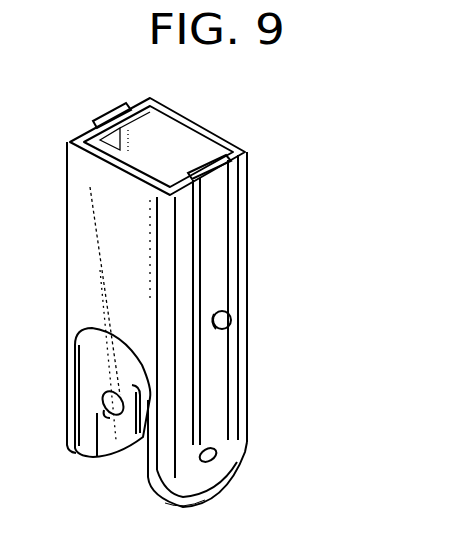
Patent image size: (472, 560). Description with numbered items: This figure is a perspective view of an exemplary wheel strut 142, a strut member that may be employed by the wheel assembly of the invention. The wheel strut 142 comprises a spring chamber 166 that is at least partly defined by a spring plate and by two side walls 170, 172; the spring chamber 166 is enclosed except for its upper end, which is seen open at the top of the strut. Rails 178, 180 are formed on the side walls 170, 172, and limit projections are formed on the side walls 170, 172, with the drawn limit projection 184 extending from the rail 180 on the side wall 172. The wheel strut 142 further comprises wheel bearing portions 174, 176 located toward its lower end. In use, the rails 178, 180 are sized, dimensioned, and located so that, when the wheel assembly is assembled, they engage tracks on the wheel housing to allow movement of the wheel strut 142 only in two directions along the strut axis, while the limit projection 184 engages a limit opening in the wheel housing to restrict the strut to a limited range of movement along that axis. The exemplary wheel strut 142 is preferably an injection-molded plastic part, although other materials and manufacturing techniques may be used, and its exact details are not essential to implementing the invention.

The wheel strut 142 is at (270, 189).
The spring chamber 166 is at (185, 138).
The side wall 170 is at (133, 117).
The rail 178 is at (100, 120).
The side wall 172 is at (235, 360).
The rail 180 is at (232, 403).
The limit projection 184 is at (230, 320).
The wheel bearing portion 174 is at (95, 466).
The wheel bearing portion 176 is at (229, 484).